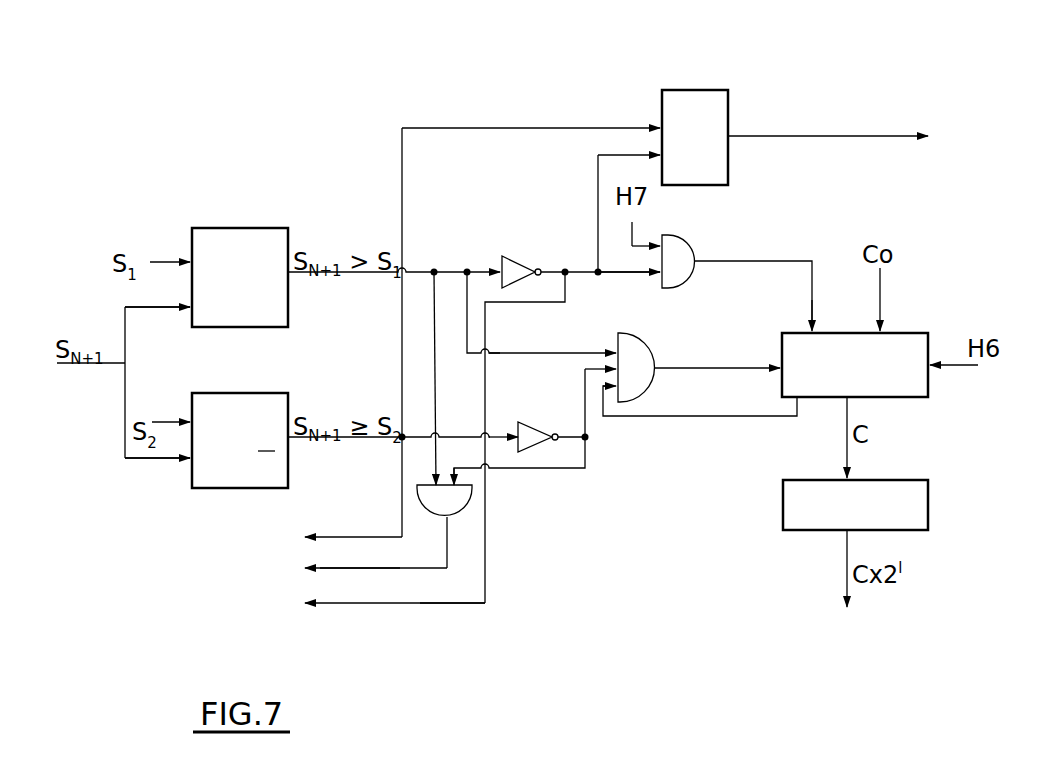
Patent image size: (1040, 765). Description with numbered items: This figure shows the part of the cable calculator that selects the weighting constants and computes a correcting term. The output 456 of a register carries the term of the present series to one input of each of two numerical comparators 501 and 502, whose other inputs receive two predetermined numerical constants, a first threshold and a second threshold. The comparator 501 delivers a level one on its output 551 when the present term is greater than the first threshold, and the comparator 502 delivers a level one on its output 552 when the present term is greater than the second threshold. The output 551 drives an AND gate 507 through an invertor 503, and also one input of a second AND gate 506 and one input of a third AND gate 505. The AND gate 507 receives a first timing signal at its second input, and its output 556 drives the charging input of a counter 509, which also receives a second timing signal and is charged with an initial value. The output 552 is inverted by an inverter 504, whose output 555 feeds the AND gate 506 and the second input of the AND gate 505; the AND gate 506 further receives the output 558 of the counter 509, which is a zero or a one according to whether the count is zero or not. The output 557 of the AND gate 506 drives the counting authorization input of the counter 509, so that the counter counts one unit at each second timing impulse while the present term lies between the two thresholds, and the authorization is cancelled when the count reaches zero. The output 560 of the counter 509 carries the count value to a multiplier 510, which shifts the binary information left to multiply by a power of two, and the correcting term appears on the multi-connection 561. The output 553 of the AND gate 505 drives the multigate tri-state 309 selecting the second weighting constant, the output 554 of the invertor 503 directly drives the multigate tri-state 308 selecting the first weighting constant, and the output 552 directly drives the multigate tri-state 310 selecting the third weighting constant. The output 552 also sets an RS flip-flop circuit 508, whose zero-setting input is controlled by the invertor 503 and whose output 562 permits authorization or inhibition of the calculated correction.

The output of the register 456 is at (97, 365).
The numerical comparator 501 is at (240, 277).
The numerical comparator 502 is at (240, 440).
The invertor 503 is at (518, 265).
The inverter 504 is at (540, 420).
The AND gate 505 is at (464, 507).
The AND gate 506 is at (640, 335).
The AND gate 507 is at (690, 243).
The RS flip-flop circuit 508 is at (704, 100).
The counter 509 is at (912, 330).
The multiplier 510 is at (908, 478).
The output of the comparator 551 is at (357, 277).
The output of the comparator 552 is at (373, 527).
The output of the AND gate 553 is at (378, 571).
The output of the inverter 554 is at (575, 275).
The output line of inverter 504 555 is at (587, 427).
The output of the AND gate 556 is at (733, 263).
The output of the AND gate 557 is at (750, 366).
The output of the counter 558 is at (680, 418).
The output of the counter 560 is at (845, 417).
The multi-connection 561 is at (847, 552).
The flip-flop output line 562 is at (822, 135).
The multigate tri-state 308 is at (364, 608).
The multigate tri-state 309 is at (321, 576).
The multigate tri-state 310 is at (322, 539).